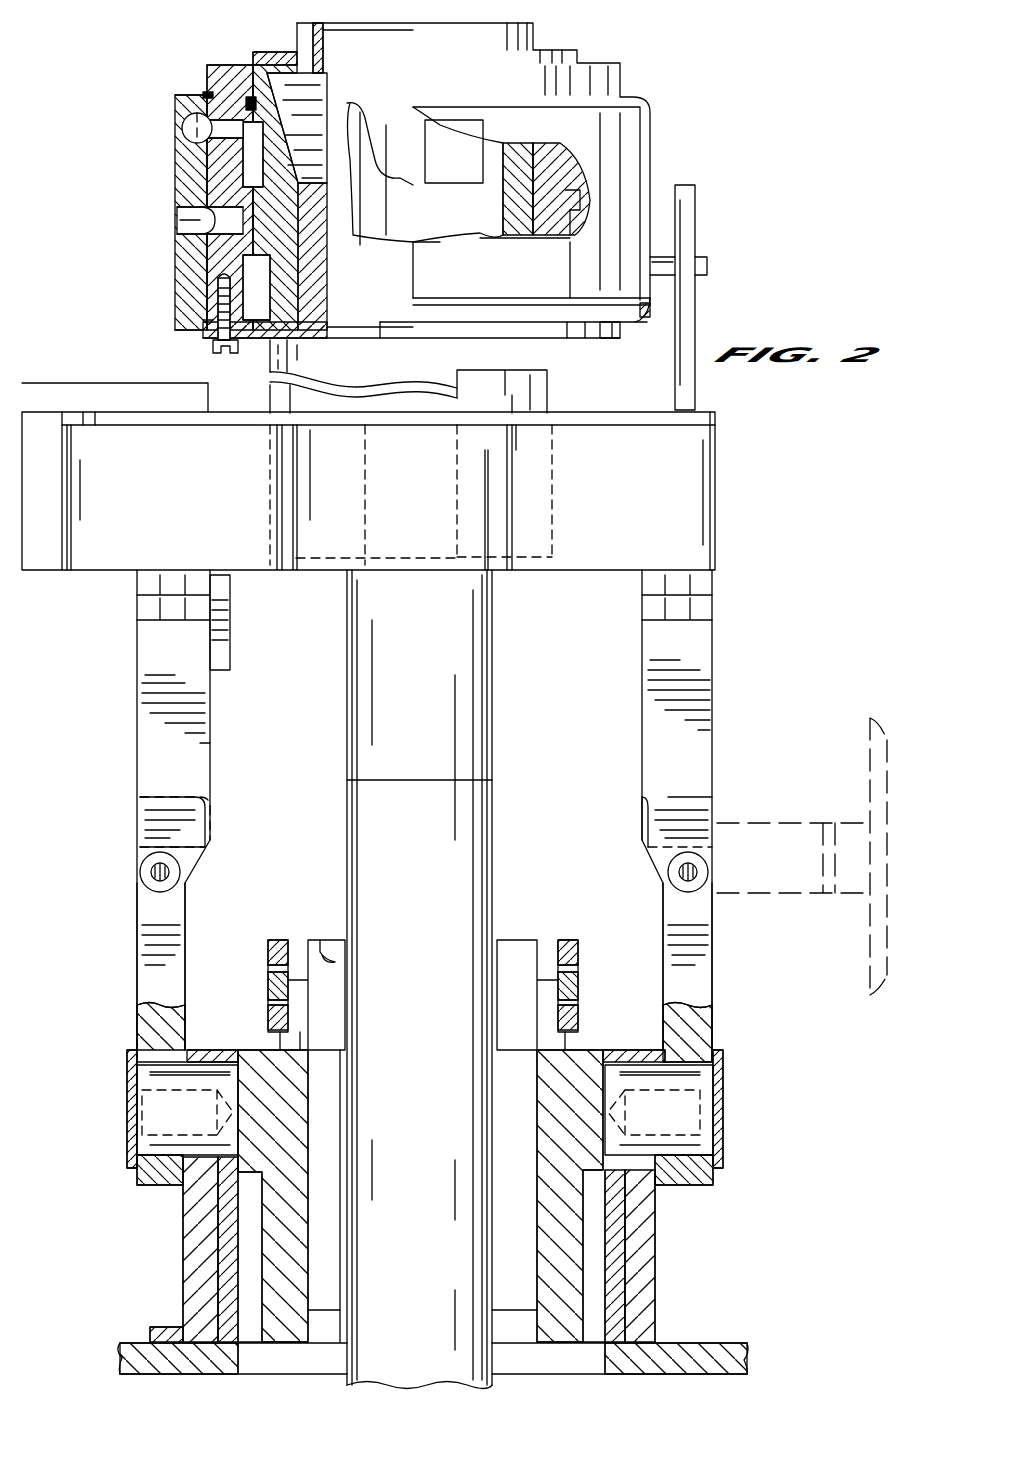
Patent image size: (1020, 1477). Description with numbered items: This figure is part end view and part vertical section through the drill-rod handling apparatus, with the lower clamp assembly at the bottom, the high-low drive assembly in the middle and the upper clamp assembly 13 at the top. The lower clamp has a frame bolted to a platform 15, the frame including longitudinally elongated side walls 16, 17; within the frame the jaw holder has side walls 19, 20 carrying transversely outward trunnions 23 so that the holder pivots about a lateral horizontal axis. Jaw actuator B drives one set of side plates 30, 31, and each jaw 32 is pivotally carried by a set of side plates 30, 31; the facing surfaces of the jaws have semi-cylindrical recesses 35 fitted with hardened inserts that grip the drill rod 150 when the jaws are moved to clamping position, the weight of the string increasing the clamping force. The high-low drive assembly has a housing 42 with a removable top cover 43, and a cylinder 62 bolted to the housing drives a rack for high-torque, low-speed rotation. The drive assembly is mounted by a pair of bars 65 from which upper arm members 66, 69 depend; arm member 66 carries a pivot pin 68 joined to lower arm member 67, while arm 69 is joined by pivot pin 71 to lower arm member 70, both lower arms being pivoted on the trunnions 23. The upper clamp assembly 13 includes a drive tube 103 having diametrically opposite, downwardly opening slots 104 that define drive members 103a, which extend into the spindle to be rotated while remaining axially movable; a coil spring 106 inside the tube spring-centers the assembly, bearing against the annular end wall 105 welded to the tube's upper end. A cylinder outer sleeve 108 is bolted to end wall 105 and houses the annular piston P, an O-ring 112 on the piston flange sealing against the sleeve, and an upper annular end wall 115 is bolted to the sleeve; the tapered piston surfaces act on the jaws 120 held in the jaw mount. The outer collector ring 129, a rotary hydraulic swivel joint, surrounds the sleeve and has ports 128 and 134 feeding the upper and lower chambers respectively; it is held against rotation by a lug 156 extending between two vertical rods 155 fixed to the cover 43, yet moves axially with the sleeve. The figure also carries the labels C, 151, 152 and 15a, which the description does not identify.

The upper clamp assembly 13 is at (658, 108).
The O-ring 112 is at (573, 60).
The upper annular end wall 115 is at (613, 84).
The jaw 120 is at (313, 95).
The jaw actuator B is at (590, 158).
The outer collector ring 129 is at (640, 162).
The clutch C is at (580, 236).
The annular piston P is at (560, 238).
The lower housing 151 is at (465, 236).
The annular end wall 105 is at (592, 340).
The cylinder outer sleeve 108 is at (650, 313).
The vertical rods 155 is at (695, 192).
The lug 156 is at (708, 265).
The port 128 is at (195, 128).
The port 134 is at (195, 225).
The drive tube 103 is at (272, 390).
The coil spring 106 is at (438, 378).
The cylinder 62 is at (70, 383).
The housing 42 is at (740, 528).
The removable top cover 43 is at (135, 430).
The drive members 103a is at (270, 520).
The slots 104 is at (455, 547).
The upper arm member 66 is at (160, 748).
The bars 65 is at (148, 580).
The pivot pin 71 is at (225, 640).
The upper arm member 69 is at (695, 653).
The center shaft 152 is at (482, 778).
The pivot pin 68 is at (150, 872).
The lower arm member 67 is at (150, 928).
The lower arm member 70 is at (695, 927).
The side plates 30 is at (268, 975).
The side plates 31 is at (282, 938).
The semi-cylindrical recesses 35 is at (337, 950).
The jaw 32 is at (515, 950).
The trunnions 23 is at (150, 1112).
The frame side wall 16 is at (183, 1240).
The jaw holder side wall 19 is at (290, 1278).
The jaw holder side wall 20 is at (540, 1237).
The frame side wall 17 is at (645, 1222).
The platform 15 is at (722, 1340).
The base plate surface 15a is at (610, 1360).
The rod 150 is at (372, 1355).